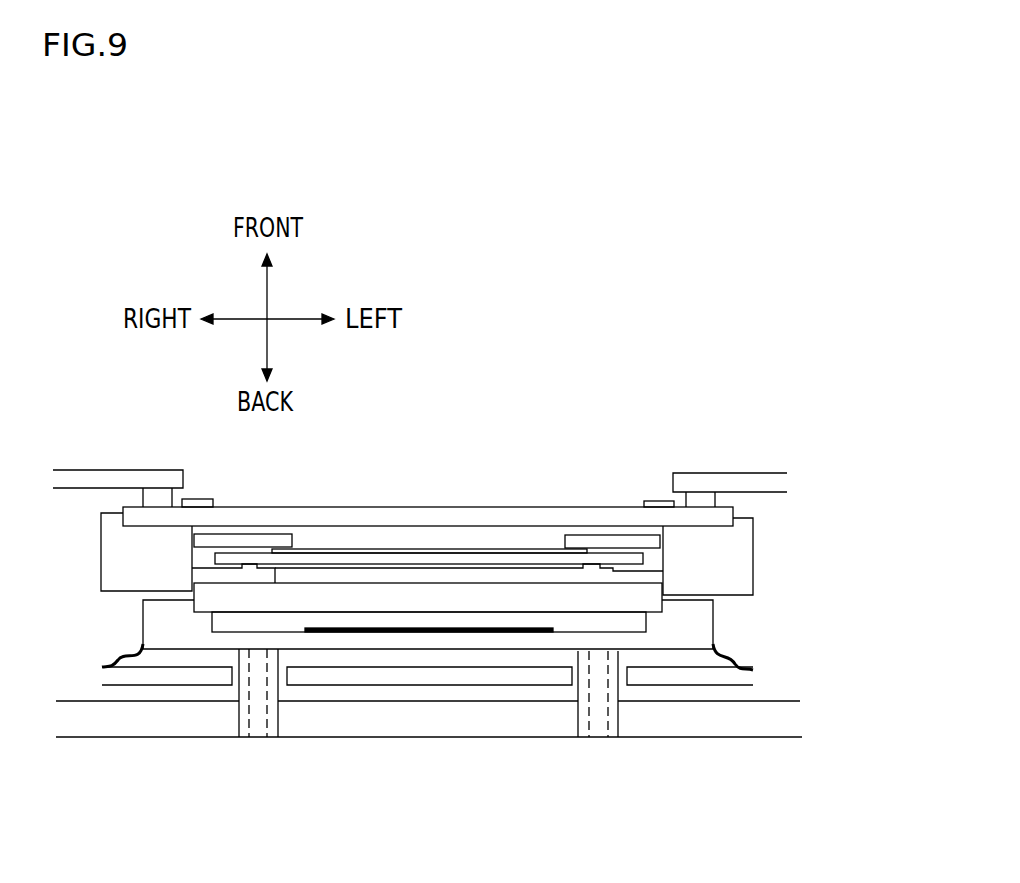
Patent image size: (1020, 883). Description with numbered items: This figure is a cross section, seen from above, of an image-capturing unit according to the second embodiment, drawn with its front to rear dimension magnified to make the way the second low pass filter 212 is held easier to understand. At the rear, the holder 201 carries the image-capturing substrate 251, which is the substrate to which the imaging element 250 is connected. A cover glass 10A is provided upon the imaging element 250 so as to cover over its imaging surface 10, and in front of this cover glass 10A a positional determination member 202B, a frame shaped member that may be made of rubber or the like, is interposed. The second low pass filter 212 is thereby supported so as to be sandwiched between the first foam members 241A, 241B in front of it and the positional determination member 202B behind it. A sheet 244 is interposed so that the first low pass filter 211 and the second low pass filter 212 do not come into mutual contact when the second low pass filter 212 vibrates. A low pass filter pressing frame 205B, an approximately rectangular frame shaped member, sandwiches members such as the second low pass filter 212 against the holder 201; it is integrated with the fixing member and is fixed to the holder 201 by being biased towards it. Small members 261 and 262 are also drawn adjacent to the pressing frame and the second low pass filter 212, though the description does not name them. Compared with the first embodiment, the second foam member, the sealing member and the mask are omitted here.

The imaging surface 10 is at (344, 627).
The cover glass 10A is at (424, 597).
The holder 201 is at (783, 725).
The positional determination member 202B is at (732, 568).
The low pass filter pressing frame 205B is at (750, 485).
The first low pass filter 211 is at (557, 556).
The second low pass filter 212 is at (498, 512).
The first foam member 241A is at (147, 496).
The first foam member 241B is at (705, 502).
The sheet 244 is at (236, 534).
The imaging element 250 is at (697, 627).
The image-capturing substrate 251 is at (180, 675).
The pad 261 is at (652, 501).
The pad 262 is at (200, 499).